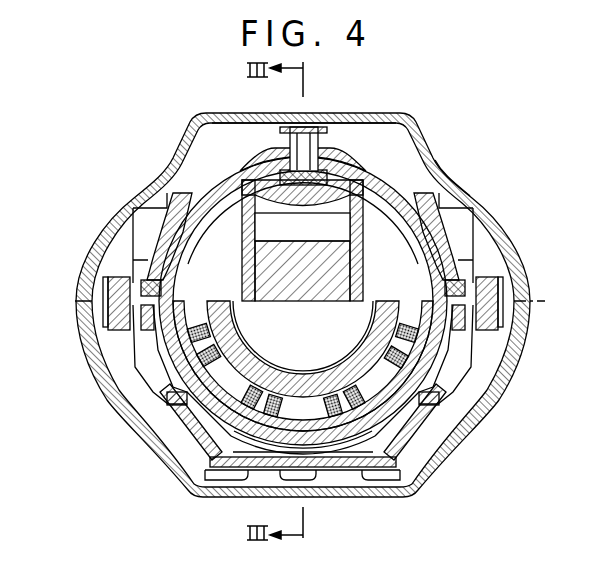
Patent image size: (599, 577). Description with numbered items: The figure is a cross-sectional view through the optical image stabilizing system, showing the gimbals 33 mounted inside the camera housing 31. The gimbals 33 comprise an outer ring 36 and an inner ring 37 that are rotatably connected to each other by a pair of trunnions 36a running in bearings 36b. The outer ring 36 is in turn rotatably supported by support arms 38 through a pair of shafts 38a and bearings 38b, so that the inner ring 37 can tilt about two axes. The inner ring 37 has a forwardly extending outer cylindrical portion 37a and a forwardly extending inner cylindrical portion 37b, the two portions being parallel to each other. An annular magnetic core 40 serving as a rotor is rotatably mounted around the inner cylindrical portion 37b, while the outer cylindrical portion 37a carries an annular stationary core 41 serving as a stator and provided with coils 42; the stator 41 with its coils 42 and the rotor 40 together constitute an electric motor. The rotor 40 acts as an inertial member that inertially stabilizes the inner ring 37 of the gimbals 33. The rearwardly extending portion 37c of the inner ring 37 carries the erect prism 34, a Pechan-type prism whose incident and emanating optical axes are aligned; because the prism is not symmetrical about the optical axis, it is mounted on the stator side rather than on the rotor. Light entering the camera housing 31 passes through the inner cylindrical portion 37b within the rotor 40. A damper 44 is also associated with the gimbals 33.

The camera housing 31 is at (411, 118).
The gimbals 33 is at (388, 140).
The erect prism 34 is at (262, 233).
The outer ring 36 is at (431, 160).
The trunnions 36a is at (300, 145).
The bearings 36b is at (320, 168).
The inner ring 37 is at (341, 170).
The outer cylindrical portion 37a is at (337, 456).
The inner cylindrical portion 37b is at (348, 356).
The rearwardly extending portion 37c is at (243, 173).
The support arms 38 is at (153, 426).
The shafts 38a is at (117, 298).
The bearings 38b is at (163, 285).
The annular magnetic core 40 is at (272, 376).
The annular stationary core 41 is at (180, 468).
The coils 42 is at (248, 385).
The damper 44 is at (474, 238).